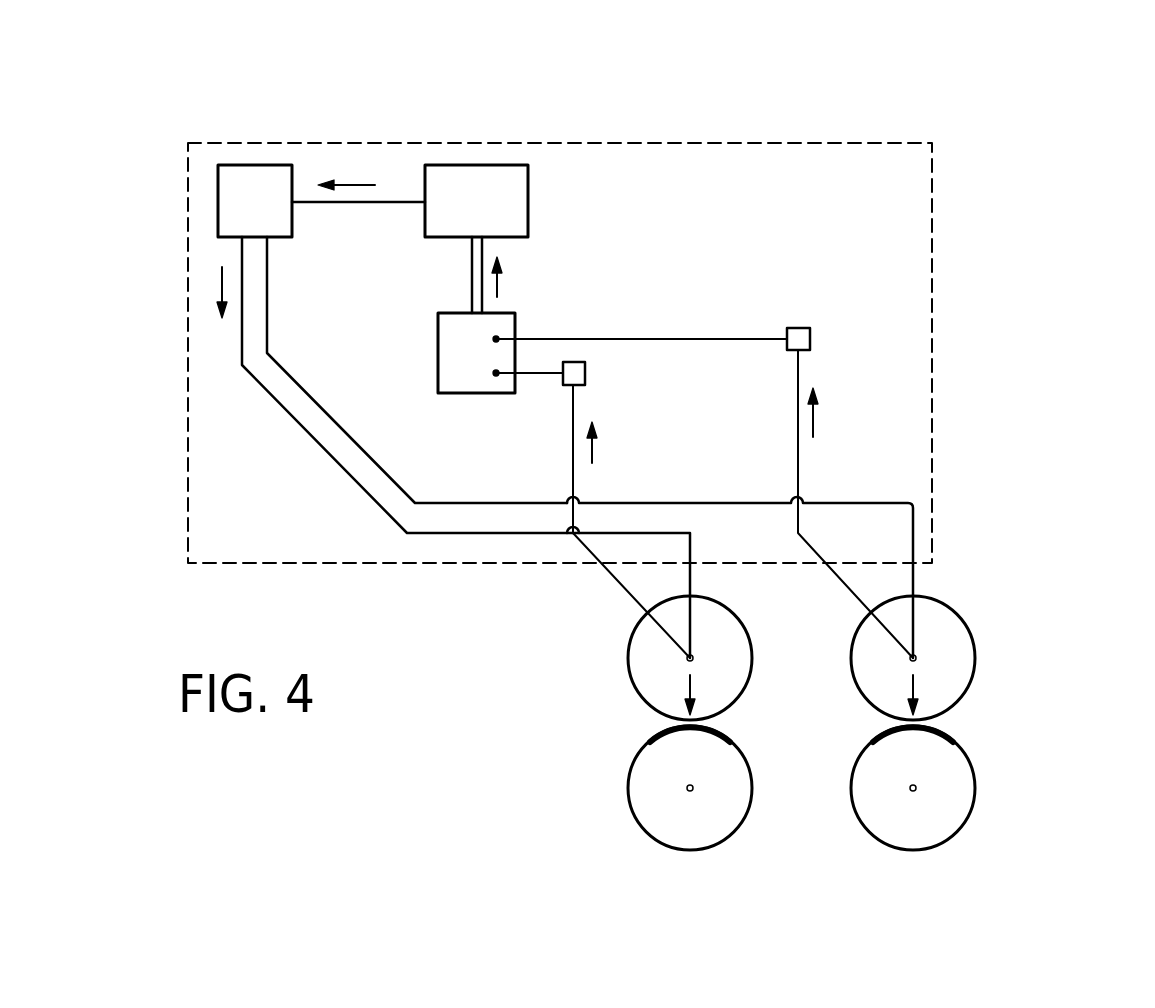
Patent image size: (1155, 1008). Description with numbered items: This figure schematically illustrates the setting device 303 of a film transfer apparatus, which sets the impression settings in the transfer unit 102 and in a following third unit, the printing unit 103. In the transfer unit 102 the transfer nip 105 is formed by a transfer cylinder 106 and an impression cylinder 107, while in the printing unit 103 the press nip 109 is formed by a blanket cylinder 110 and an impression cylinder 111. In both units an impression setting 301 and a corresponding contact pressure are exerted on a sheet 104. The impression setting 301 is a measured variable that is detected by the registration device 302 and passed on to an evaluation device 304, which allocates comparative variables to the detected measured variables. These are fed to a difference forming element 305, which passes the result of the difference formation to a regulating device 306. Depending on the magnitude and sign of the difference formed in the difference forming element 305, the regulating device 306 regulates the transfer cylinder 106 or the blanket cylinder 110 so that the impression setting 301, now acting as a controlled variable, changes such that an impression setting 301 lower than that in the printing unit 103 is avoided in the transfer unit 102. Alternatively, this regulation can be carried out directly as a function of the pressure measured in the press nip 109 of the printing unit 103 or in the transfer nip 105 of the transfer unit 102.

The transfer unit 102 is at (976, 694).
The printing unit 103 is at (657, 727).
The sheet 104 is at (890, 733).
The transfer nip 105 is at (972, 727).
The transfer cylinder 106 is at (950, 662).
The impression cylinder 107 is at (940, 820).
The press nip 109 is at (627, 732).
The blanket cylinder 110 is at (653, 658).
The impression cylinder 111 is at (670, 798).
The impression setting 301 is at (690, 684).
The registration device 302 is at (575, 362).
The setting device 303 is at (999, 120).
The evaluation device 304 is at (500, 328).
The difference forming element 305 is at (483, 192).
The regulating device 306 is at (267, 195).